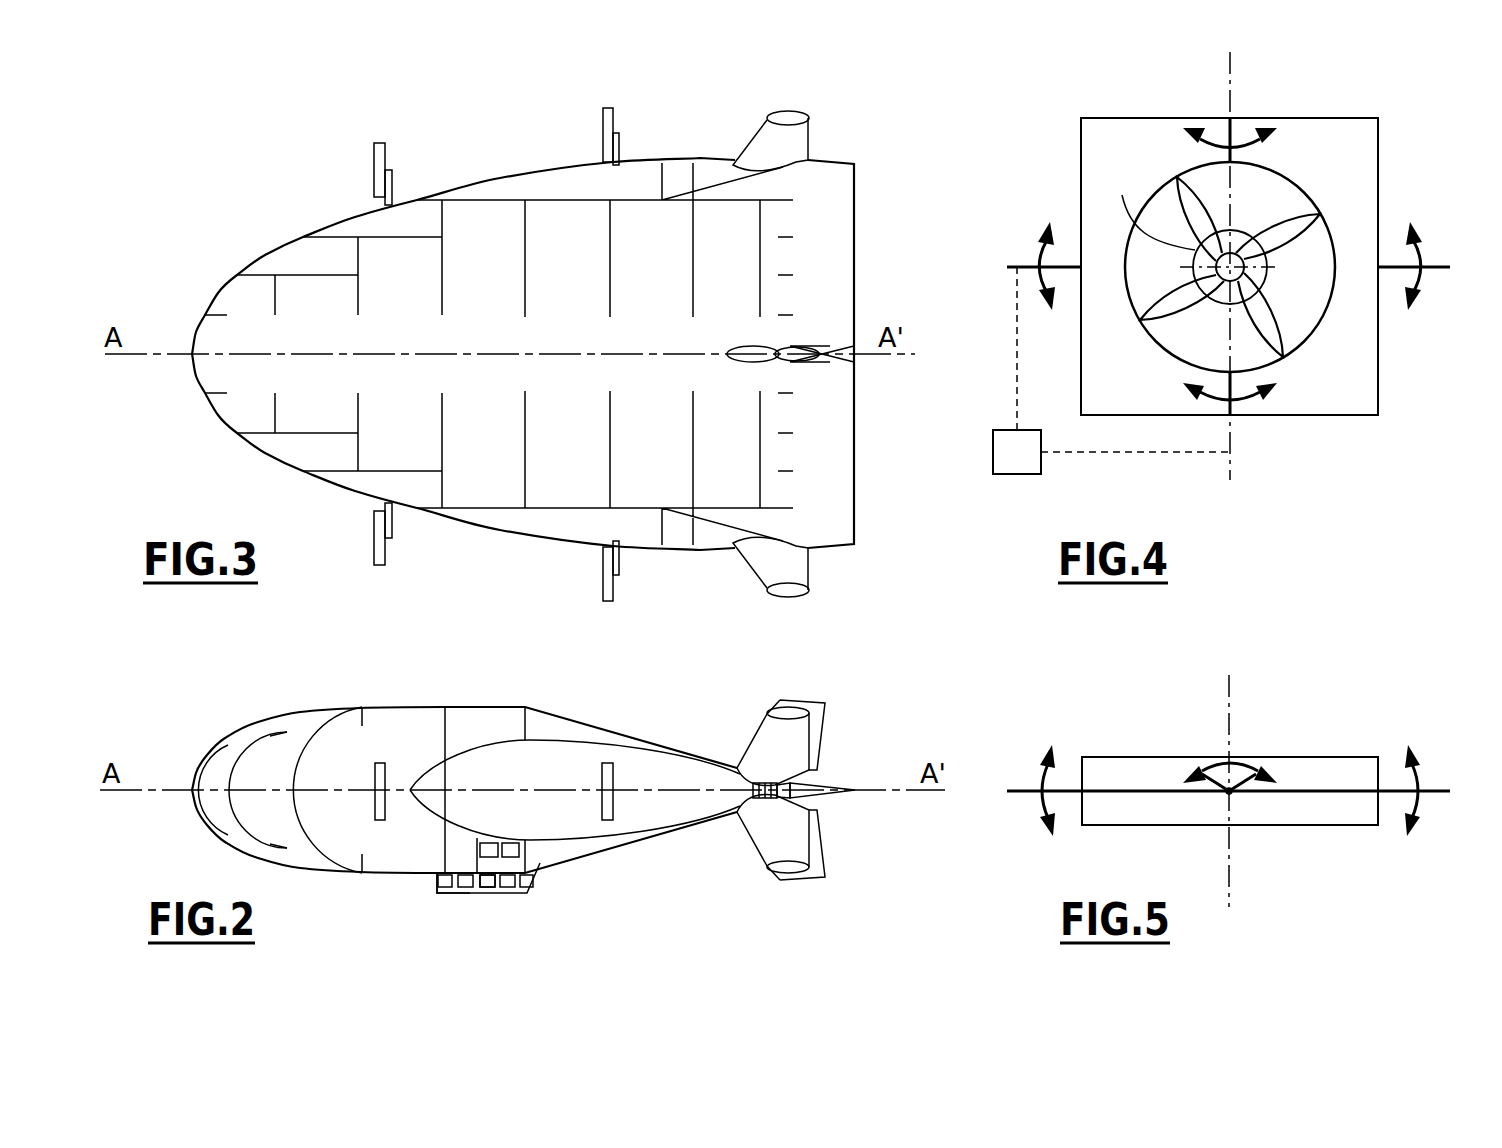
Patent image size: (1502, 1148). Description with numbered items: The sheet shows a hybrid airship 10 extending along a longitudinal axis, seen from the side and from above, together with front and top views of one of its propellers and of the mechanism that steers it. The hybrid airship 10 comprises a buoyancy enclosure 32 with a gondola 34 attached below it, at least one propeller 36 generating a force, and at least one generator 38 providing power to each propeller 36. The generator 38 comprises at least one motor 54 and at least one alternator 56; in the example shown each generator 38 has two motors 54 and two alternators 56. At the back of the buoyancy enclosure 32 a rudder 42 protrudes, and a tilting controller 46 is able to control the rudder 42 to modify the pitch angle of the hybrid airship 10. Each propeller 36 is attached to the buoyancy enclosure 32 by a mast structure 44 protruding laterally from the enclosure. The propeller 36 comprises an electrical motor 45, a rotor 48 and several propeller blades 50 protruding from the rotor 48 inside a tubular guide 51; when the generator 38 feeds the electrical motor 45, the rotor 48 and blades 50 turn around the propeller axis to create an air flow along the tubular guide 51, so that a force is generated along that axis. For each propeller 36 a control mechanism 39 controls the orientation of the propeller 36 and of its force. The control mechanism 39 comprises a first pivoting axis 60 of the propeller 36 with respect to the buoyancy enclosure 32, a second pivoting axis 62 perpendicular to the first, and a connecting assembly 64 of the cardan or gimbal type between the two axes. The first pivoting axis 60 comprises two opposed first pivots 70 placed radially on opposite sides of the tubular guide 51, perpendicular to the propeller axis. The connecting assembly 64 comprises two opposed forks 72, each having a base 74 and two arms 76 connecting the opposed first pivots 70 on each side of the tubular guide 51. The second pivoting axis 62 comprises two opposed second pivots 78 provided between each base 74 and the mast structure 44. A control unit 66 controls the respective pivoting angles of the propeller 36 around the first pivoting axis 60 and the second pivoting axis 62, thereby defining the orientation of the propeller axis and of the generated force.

In FIG. 3, the hybrid airship 10 is at (870, 100).
In FIG. 2, the hybrid airship 10 is at (886, 719).
In FIG. 3, the buoyancy enclosure 32 is at (542, 186).
In FIG. 2, the buoyancy enclosure 32 is at (475, 735).
In FIG. 2, the gondola 34 is at (530, 890).
In FIG. 3, the propeller 36 is at (378, 152).
In FIG. 2, the propeller 36 is at (388, 776).
In FIG. 4, the propeller 36 is at (1202, 281).
In FIG. 5, the propeller 36 is at (1174, 716).
In FIG. 2, the generator 38 is at (512, 888).
In FIG. 4, the control mechanism 39 is at (1040, 137).
In FIG. 5, the control mechanism 39 is at (1048, 862).
In FIG. 3, the rudder 42 is at (843, 423).
In FIG. 2, the rudder 42 is at (832, 800).
In FIG. 3, the mast structure 44 is at (392, 188).
In FIG. 4, the electrical motor 45 is at (1262, 283).
In FIG. 2, the tilting controller 46 is at (437, 880).
In FIG. 4, the rotor 48 is at (1185, 330).
In FIG. 4, the propeller blades 50 is at (1160, 296).
In FIG. 4, the tubular guide 51 is at (1290, 170).
In FIG. 5, the tubular guide 51 is at (1203, 800).
In FIG. 2, the motor 54 is at (488, 882).
In FIG. 2, the alternator 56 is at (530, 848).
In FIG. 4, the first pivoting axis 60 is at (1226, 62).
In FIG. 5, the first pivoting axis 60 is at (1232, 788).
In FIG. 4, the second pivoting axis 62 is at (1001, 240).
In FIG. 5, the second pivoting axis 62 is at (1012, 766).
In FIG. 4, the connecting assembly 64 is at (1420, 131).
In FIG. 4, the control unit 66 is at (1015, 460).
In FIG. 4, the first pivot 70 is at (1235, 125).
In FIG. 5, the first pivot 70 is at (1232, 795).
In FIG. 4, the fork 72 is at (1052, 389).
In FIG. 4, the base 74 is at (1083, 153).
In FIG. 4, the arms 76 is at (1125, 118).
In FIG. 4, the second pivot 78 is at (1068, 265).
In FIG. 5, the second pivot 78 is at (1062, 788).